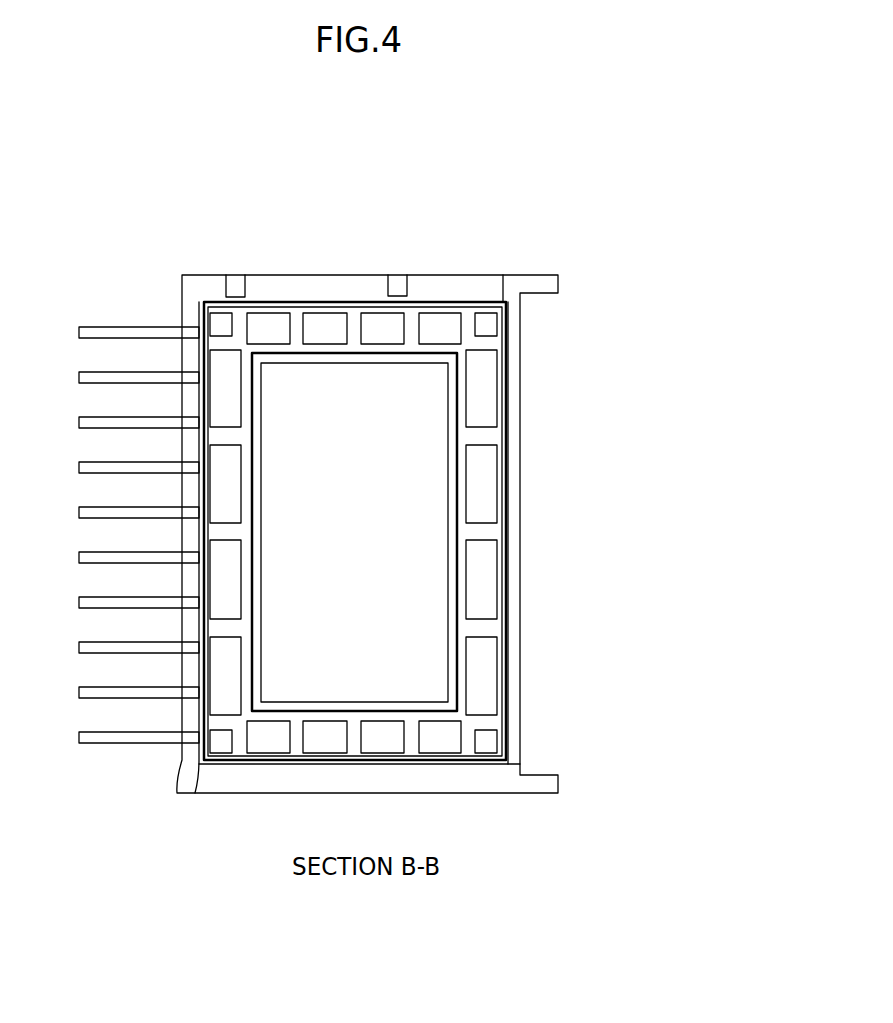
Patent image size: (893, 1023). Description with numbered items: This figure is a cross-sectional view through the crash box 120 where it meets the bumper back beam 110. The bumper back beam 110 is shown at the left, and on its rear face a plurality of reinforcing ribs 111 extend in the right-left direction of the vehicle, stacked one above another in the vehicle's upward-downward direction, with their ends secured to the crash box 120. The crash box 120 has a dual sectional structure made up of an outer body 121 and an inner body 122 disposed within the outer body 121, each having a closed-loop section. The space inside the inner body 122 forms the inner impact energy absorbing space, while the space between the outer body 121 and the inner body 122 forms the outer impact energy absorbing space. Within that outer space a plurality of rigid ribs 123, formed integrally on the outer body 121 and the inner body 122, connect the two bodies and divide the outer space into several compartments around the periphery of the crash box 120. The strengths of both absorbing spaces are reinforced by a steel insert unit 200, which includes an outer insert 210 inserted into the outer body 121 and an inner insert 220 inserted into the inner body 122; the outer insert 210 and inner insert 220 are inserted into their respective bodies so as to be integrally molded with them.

The bumper back beam 110 is at (295, 580).
The reinforcing rib 111 is at (123, 693).
The crash box 120 is at (479, 486).
The outer body 121 is at (450, 303).
The inner body 122 is at (465, 379).
The rigid rib 123 is at (482, 435).
The insert unit 200 is at (507, 532).
The outer insert 210 is at (502, 532).
The inner insert 220 is at (458, 582).